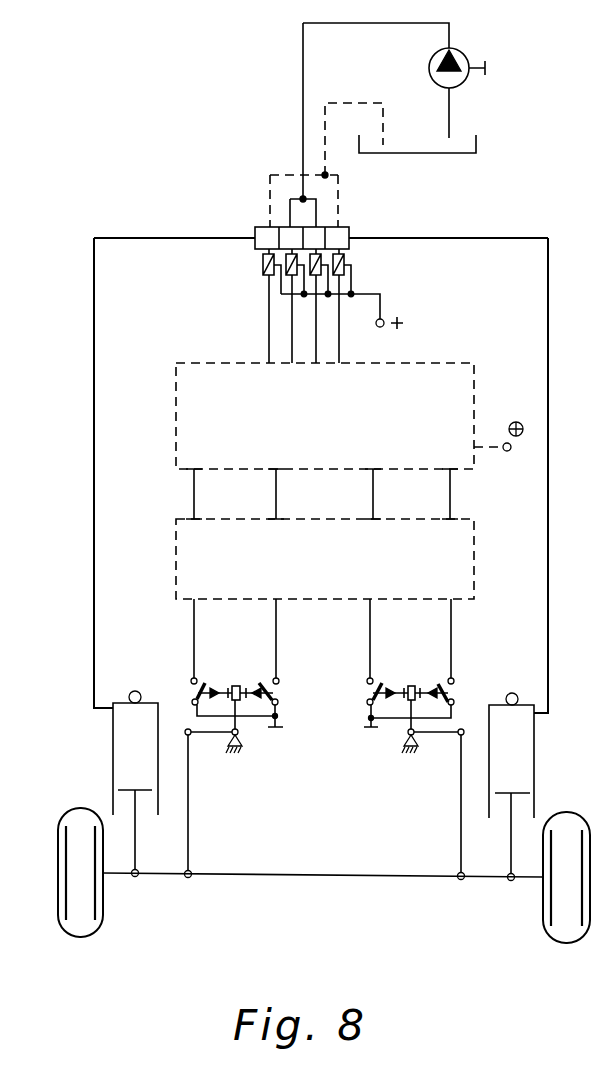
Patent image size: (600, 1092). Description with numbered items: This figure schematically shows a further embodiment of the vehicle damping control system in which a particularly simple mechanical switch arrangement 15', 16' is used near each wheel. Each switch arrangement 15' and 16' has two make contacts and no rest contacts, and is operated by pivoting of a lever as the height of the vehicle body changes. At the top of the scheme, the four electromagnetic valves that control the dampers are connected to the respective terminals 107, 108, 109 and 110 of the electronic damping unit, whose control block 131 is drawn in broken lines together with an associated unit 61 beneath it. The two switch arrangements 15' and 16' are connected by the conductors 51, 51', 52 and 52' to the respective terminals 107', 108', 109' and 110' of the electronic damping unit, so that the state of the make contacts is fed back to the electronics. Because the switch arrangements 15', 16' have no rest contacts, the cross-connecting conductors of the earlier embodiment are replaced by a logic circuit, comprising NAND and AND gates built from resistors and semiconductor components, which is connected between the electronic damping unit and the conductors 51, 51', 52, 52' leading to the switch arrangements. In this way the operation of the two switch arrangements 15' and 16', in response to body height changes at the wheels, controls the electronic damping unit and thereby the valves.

The terminal 107 is at (263, 306).
The terminal 108 is at (288, 306).
The terminal 109 is at (312, 306).
The terminal 110 is at (336, 306).
The control unit 131 is at (407, 363).
The terminal 107' is at (181, 494).
The terminal 108' is at (265, 494).
The terminal 109' is at (364, 494).
The terminal 110' is at (459, 494).
The switching unit 61 is at (478, 560).
The conductor 51 is at (178, 641).
The conductor 51' is at (262, 641).
The conductor 52 is at (355, 641).
The conductor 52' is at (470, 641).
The switch arrangement 15' is at (234, 777).
The switch arrangement 16' is at (409, 778).